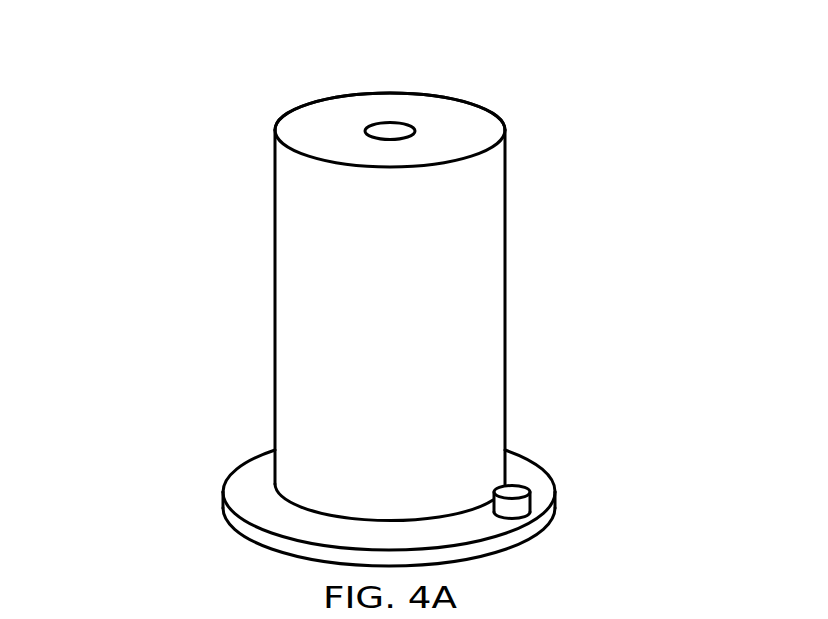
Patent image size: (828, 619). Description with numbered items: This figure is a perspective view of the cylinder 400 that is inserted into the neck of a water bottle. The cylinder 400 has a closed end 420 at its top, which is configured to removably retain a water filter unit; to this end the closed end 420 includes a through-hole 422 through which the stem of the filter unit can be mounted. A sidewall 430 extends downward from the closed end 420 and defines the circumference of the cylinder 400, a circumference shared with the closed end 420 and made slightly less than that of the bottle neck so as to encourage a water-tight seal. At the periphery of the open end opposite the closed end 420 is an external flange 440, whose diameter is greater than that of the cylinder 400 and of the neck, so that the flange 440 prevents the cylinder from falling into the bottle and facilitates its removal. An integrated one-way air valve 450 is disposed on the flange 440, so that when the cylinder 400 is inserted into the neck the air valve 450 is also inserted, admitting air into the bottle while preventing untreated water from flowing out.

The cylinder 400 is at (172, 272).
The closed end 420 is at (457, 125).
The through-hole 422 is at (390, 128).
The sidewall 430 is at (506, 343).
The external flange 440 is at (258, 515).
The air valve 450 is at (512, 491).